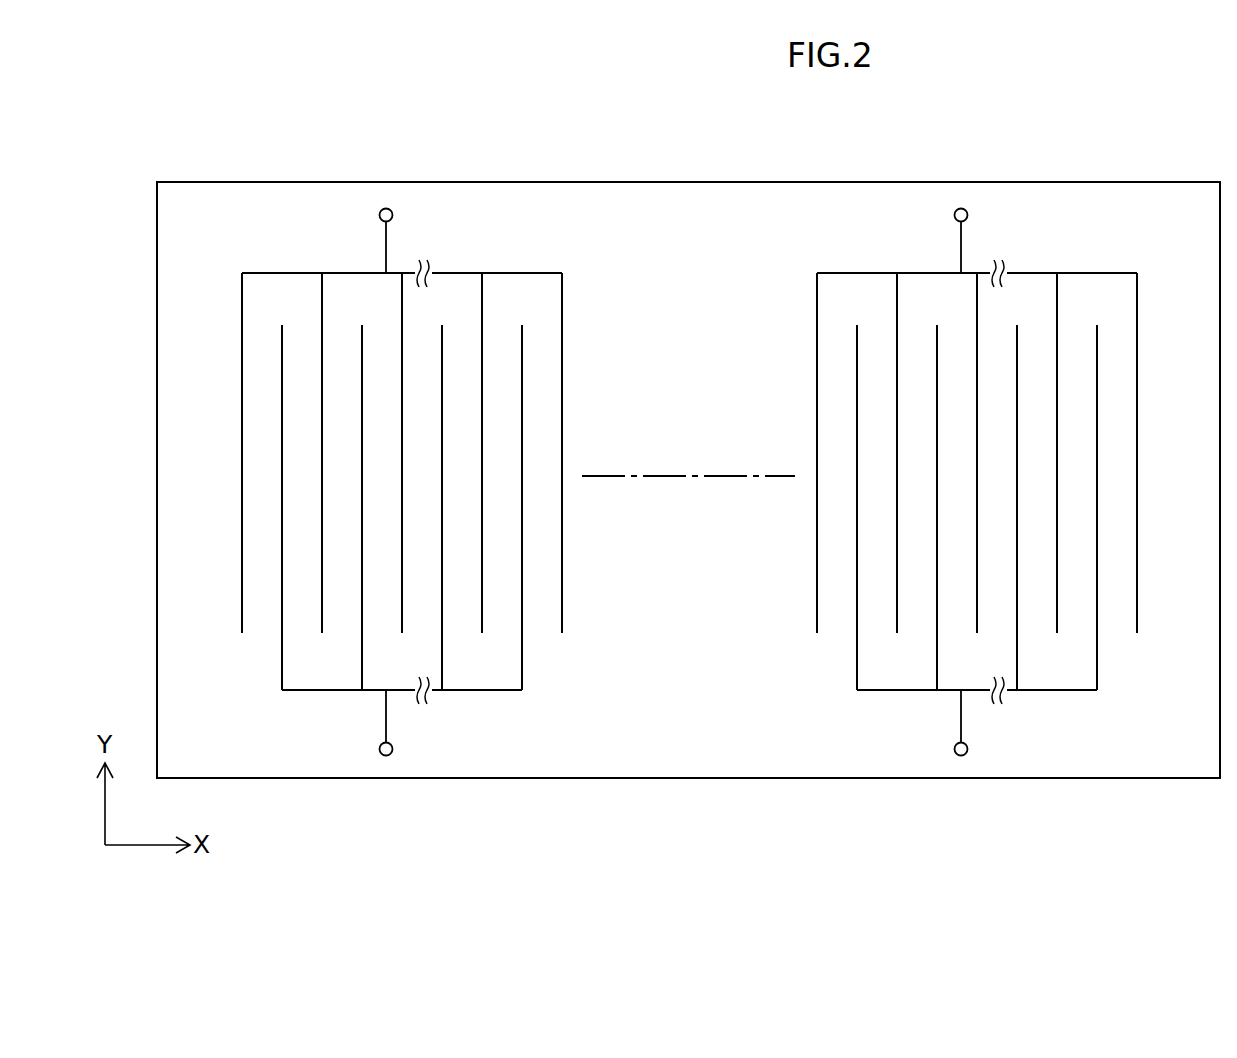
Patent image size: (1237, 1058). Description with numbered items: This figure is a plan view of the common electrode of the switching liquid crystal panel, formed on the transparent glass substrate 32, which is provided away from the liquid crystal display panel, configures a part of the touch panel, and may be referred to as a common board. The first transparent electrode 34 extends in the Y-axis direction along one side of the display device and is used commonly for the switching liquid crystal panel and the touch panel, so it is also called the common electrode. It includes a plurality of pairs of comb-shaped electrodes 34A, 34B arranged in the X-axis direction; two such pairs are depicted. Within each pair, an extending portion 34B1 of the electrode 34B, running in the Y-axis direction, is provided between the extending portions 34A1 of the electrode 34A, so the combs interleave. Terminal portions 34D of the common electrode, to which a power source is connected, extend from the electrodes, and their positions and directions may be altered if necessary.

The glass substrate 32 is at (701, 182).
The first transparent electrode 34 is at (697, 470).
The comb-shaped electrode 34A is at (701, 380).
The comb-shaped electrode 34B is at (703, 582).
The extending portion 34A1 is at (563, 426).
The extending portion 34B1 is at (523, 560).
The terminal portion 34D is at (392, 211).